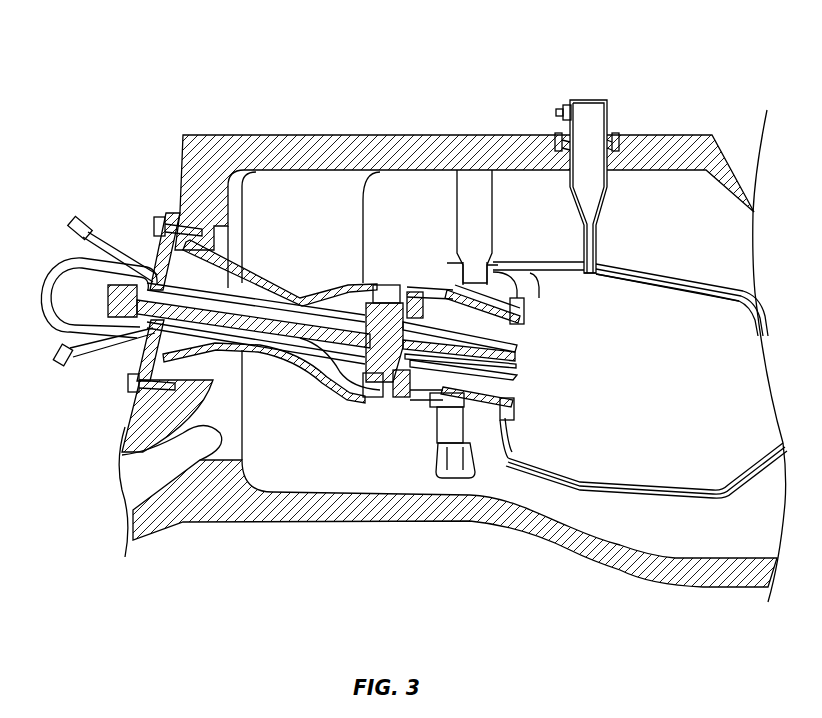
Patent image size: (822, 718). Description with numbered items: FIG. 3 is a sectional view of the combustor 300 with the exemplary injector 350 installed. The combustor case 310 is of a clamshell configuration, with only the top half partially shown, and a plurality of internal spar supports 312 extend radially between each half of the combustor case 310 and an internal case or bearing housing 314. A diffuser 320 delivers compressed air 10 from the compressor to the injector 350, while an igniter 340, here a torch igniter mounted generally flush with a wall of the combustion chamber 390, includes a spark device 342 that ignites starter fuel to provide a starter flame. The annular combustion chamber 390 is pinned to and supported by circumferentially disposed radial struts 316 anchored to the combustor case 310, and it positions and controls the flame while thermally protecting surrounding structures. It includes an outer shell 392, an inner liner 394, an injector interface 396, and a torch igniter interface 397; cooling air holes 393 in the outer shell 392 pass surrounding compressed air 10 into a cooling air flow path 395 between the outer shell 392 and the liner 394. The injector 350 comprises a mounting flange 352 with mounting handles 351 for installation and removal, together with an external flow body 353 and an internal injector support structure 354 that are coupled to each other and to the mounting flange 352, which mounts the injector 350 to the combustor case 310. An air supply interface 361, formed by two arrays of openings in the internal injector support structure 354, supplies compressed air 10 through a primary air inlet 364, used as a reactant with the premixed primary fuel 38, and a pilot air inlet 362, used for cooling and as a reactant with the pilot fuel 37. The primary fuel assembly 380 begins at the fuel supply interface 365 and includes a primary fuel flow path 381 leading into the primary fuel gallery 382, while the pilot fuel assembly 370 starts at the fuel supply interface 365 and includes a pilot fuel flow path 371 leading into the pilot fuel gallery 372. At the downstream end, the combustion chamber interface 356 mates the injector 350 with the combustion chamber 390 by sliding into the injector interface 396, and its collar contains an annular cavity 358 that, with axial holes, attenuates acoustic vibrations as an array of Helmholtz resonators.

The combustor 300 is at (146, 50).
The combustor case 310 is at (300, 134).
The internal case (bearing housing) 314 is at (378, 522).
The compressed air 10 is at (138, 484).
The injector 350 is at (251, 272).
The diffuser 320 is at (233, 438).
The internal spar supports 312 is at (366, 208).
The mounting flange 352 is at (146, 245).
The mounting handles 351 is at (116, 338).
The fuel supply interface 365 is at (48, 255).
The premixed primary fuel 38 is at (70, 213).
The pilot fuel 37 is at (53, 358).
The primary fuel flow path 381 is at (305, 300).
The external flow body 353 is at (317, 343).
The pilot fuel flow path 371 is at (353, 357).
The internal injector support structure 354 is at (370, 386).
The primary fuel assembly 380 is at (538, 330).
The pilot fuel assembly 370 is at (533, 362).
The primary fuel gallery 382 is at (386, 278).
The air supply interface 361 is at (416, 286).
The combustion chamber interface 356 is at (527, 310).
The pilot fuel gallery 372 is at (367, 397).
The pilot air inlet 362 is at (394, 408).
The primary air inlet 364 is at (424, 410).
The annular cavity 358 is at (520, 407).
The injector interface 396 is at (512, 440).
The radial struts 316 is at (496, 210).
The igniter 340 is at (600, 94).
The spark device 342 is at (563, 114).
The combustion chamber 390 is at (620, 246).
The outer shell 392 is at (643, 265).
The cooling air flow path 395 is at (697, 286).
The inner liner 394 is at (680, 292).
The torch igniter interface 397 is at (595, 275).
The cooling air holes 393 is at (592, 486).